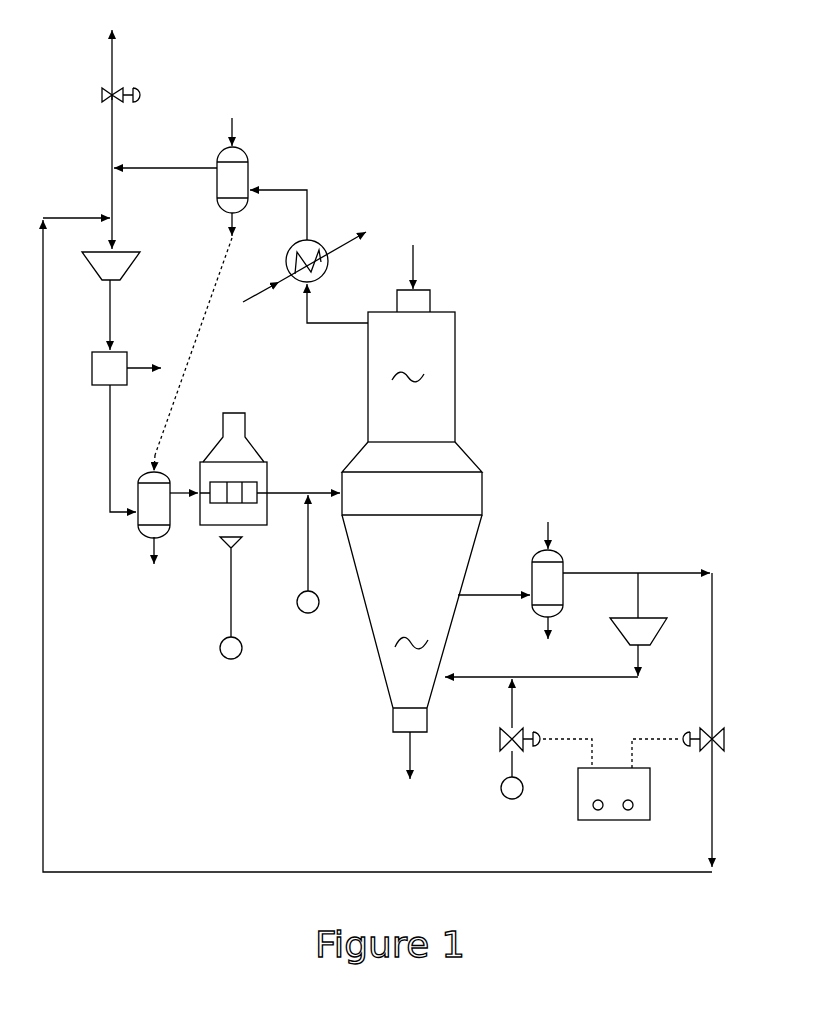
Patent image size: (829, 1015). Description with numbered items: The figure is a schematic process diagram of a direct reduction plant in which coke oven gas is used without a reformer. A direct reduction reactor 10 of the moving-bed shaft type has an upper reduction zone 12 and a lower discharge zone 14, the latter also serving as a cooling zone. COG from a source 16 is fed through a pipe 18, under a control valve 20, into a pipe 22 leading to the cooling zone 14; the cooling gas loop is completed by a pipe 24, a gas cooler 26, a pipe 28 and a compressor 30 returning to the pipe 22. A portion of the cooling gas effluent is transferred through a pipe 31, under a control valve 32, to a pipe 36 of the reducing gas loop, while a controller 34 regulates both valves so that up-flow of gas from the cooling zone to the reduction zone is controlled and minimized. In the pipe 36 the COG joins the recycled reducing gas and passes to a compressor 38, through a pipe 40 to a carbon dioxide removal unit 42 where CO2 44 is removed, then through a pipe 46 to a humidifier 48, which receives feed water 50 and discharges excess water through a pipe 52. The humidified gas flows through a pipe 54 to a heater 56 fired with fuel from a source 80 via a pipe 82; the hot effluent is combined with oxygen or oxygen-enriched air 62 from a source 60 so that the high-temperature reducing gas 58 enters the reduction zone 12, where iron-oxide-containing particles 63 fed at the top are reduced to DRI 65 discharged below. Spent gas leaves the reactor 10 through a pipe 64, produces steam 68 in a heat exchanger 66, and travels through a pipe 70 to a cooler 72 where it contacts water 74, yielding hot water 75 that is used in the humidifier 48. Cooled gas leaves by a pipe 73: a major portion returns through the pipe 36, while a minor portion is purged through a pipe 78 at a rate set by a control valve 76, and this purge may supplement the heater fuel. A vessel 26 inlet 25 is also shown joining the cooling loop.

The direct reduction reactor 10 is at (464, 452).
The reduction zone 12 is at (411, 366).
The discharge zone 14 is at (412, 623).
The COG source 16 is at (502, 797).
The pipe 18 is at (507, 760).
The control valve 20 is at (520, 732).
The pipe 22 is at (470, 676).
The pipe 24 is at (482, 592).
The inlet line 25 is at (545, 542).
The gas cooler 26 is at (559, 551).
The pipe 28 is at (636, 597).
The compressor 30 is at (615, 621).
The pipe 31 is at (713, 672).
The control valve 32 is at (722, 733).
The controller 34 is at (578, 808).
The pipe 36 is at (110, 198).
The compressor 38 is at (132, 272).
The pipe 40 is at (112, 323).
The CO2 removal unit 42 is at (92, 372).
The CO2 44 is at (132, 366).
The pipe 46 is at (110, 450).
The humidifier 48 is at (162, 472).
The feed water 50 is at (152, 457).
The pipe 52 is at (152, 556).
The pipe 54 is at (183, 497).
The heater 56 is at (248, 440).
The reducing gas 58 is at (282, 490).
The oxygen source 60 is at (296, 603).
The oxygen or oxygen-enriched air 62 is at (306, 513).
The iron-oxide-containing particles 63 is at (418, 272).
The pipe 64 is at (330, 322).
The DRI 65 is at (407, 762).
The heat exchanger 66 is at (293, 283).
The steam 68 is at (342, 243).
The pipe 70 is at (278, 188).
The cooler 72 is at (246, 152).
The pipe 73 is at (166, 166).
The water 74 is at (230, 130).
The hot water 75 is at (222, 224).
The control valve 76 is at (135, 85).
The pipe 78 is at (112, 67).
The fuel source 80 is at (220, 656).
The pipe 82 is at (230, 625).